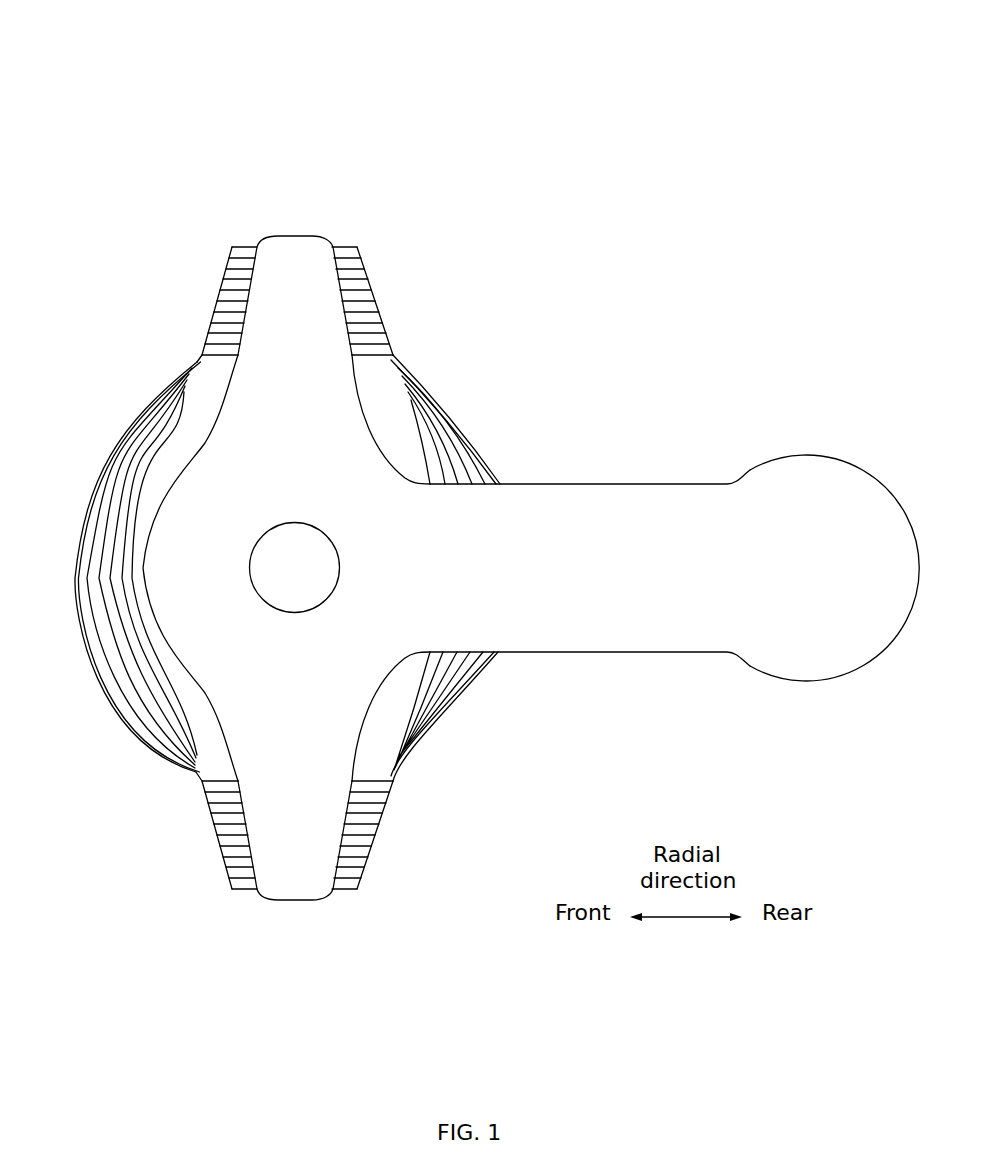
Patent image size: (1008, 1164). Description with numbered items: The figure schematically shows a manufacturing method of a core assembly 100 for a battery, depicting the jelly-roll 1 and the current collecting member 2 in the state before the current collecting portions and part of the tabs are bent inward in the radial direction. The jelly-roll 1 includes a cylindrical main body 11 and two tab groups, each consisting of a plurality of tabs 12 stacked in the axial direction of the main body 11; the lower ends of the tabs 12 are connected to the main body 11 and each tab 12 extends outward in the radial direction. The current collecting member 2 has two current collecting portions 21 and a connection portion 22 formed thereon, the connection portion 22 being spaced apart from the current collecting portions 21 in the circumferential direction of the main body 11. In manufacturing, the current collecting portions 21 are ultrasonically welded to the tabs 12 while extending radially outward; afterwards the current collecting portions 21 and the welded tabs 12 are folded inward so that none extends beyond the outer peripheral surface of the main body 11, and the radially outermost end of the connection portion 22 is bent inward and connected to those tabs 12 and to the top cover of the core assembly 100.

The core assembly 100 is at (123, 43).
The jelly-roll 1 is at (42, 272).
The main body 11 is at (152, 432).
The tab 12 is at (208, 323).
The current collecting member 2 is at (557, 517).
The current collecting portion 21 is at (298, 283).
The connection portion 22 is at (812, 488).